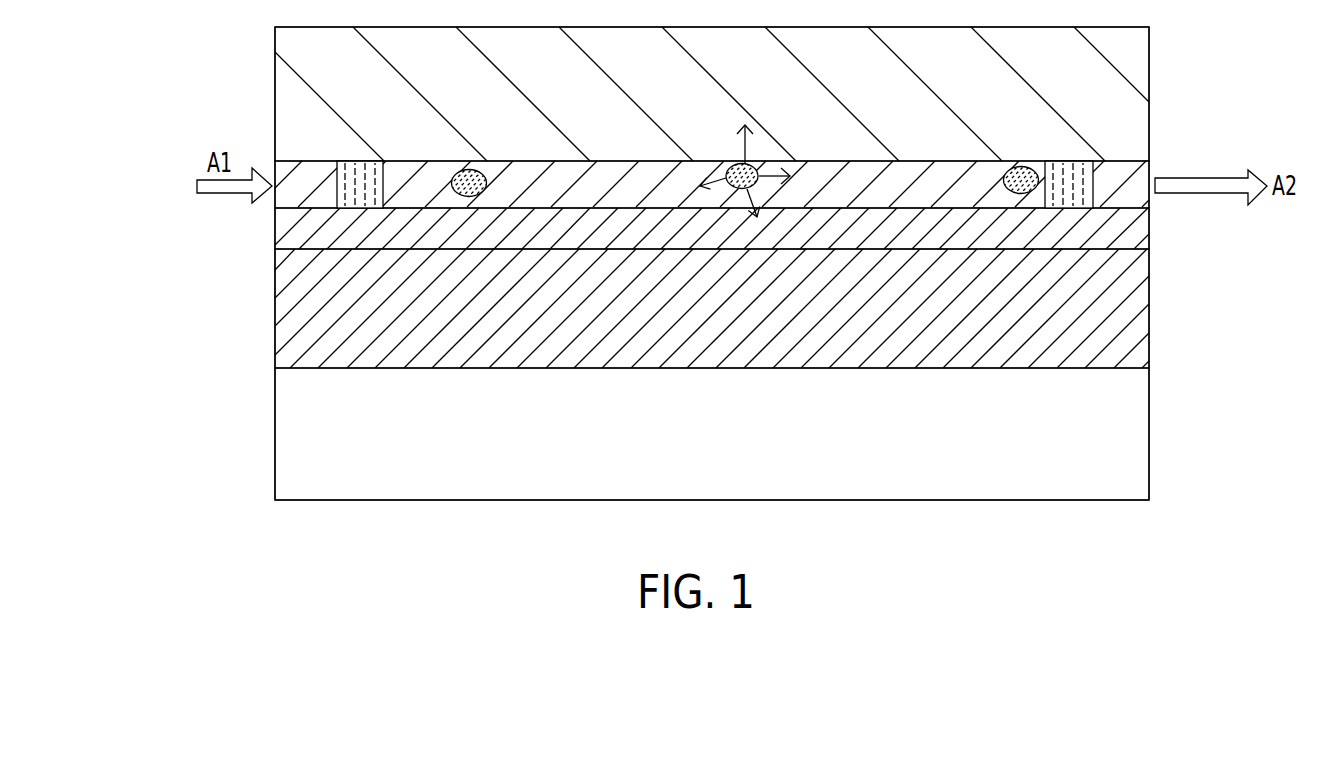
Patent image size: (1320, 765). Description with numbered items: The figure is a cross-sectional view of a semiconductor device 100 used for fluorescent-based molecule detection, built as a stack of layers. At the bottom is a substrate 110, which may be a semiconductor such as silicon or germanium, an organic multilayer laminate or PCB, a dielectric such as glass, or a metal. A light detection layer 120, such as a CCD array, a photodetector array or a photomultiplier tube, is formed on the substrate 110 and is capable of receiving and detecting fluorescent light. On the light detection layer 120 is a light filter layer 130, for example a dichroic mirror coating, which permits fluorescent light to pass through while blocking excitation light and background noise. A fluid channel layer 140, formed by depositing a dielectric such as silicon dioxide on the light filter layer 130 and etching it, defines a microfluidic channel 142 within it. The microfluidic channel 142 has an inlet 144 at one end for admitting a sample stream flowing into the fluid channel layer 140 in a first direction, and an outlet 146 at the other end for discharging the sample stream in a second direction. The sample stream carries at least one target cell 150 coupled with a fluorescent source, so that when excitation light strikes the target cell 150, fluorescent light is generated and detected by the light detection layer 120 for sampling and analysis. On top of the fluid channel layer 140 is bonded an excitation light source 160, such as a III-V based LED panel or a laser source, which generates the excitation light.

The semiconductor device 100 is at (183, 80).
The substrate 110 is at (854, 458).
The light detection layer 120 is at (854, 327).
The light filter layer 130 is at (1138, 233).
The fluid channel layer 140 is at (1077, 165).
The microfluidic channel 142 is at (627, 198).
The inlet 144 is at (305, 173).
The outlet 146 is at (1147, 167).
The target cell 150 is at (758, 195).
The excitation light source 160 is at (854, 100).